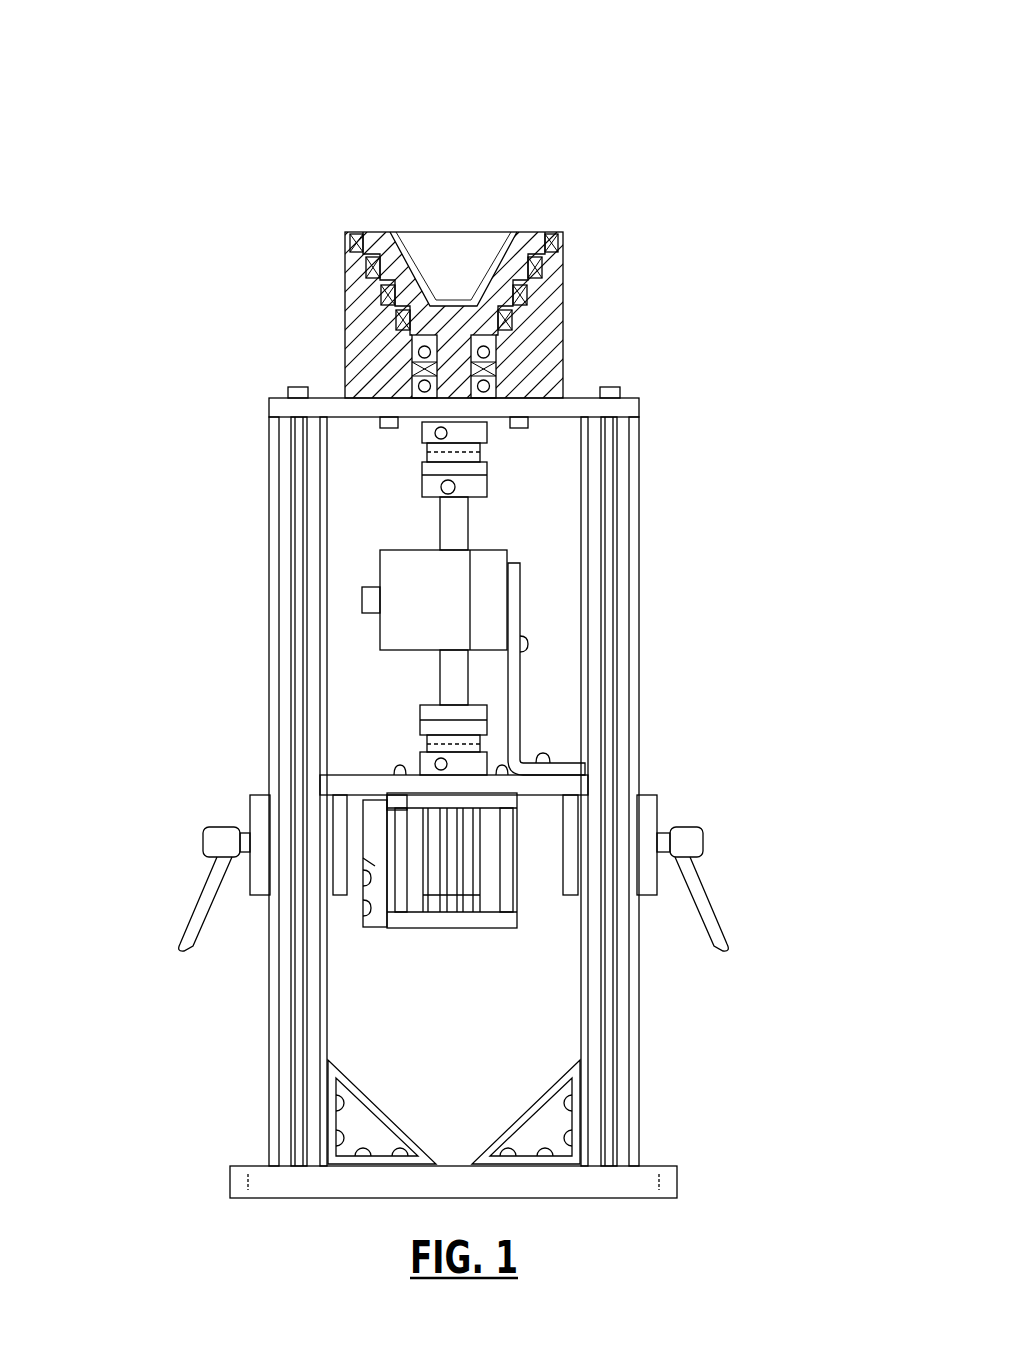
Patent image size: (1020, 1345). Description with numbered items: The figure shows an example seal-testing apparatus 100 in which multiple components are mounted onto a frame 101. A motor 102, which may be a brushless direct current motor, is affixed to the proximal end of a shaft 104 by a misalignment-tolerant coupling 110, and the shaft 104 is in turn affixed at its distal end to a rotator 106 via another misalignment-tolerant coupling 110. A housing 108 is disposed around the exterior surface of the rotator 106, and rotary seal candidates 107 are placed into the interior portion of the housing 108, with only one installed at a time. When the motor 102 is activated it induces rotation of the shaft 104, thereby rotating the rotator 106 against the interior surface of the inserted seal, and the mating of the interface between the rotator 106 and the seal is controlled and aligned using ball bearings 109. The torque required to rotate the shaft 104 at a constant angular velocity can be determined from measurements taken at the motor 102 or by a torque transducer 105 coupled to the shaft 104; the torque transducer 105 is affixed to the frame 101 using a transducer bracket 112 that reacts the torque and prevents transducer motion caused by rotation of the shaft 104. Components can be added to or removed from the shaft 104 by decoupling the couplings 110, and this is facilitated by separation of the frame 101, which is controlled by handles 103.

The seal-testing apparatus 100 is at (180, 106).
The frame 101 is at (682, 1172).
The motor 102 is at (373, 944).
The handles 103 is at (204, 845).
The shaft 104 is at (464, 523).
The torque transducer 105 is at (522, 551).
The rotator 106 is at (404, 221).
The seal candidate 107 is at (570, 247).
The housing 108 is at (336, 316).
The ball bearings 109 is at (391, 389).
The misalignment-tolerant coupling 110 is at (403, 491).
The transducer bracket 112 is at (529, 714).